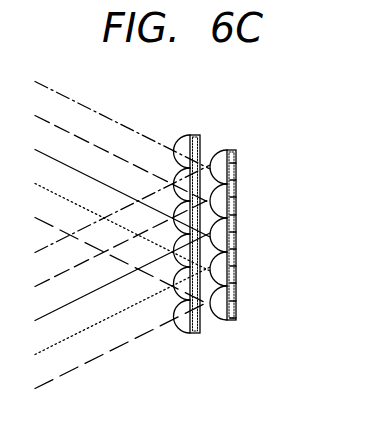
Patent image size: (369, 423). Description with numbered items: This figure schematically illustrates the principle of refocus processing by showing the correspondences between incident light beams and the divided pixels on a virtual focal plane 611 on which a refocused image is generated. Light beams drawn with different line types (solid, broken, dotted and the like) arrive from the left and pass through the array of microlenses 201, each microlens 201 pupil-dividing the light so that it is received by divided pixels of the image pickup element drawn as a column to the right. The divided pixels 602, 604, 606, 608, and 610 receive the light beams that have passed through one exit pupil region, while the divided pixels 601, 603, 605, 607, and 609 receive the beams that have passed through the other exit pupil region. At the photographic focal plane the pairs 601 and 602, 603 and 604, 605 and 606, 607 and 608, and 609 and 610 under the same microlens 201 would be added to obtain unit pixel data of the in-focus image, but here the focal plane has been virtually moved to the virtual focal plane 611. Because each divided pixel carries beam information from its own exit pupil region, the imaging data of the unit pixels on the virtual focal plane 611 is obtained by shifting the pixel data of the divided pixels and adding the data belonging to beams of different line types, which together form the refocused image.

The microlens 201 is at (188, 137).
The virtual focal plane 611 is at (192, 134).
The divided pixel 601 is at (236, 163).
The divided pixel 602 is at (236, 180).
The divided pixel 603 is at (236, 197).
The divided pixel 604 is at (236, 215).
The divided pixel 605 is at (236, 232).
The divided pixel 606 is at (236, 249).
The divided pixel 607 is at (236, 266).
The divided pixel 608 is at (236, 283).
The divided pixel 609 is at (236, 301).
The divided pixel 610 is at (236, 318).